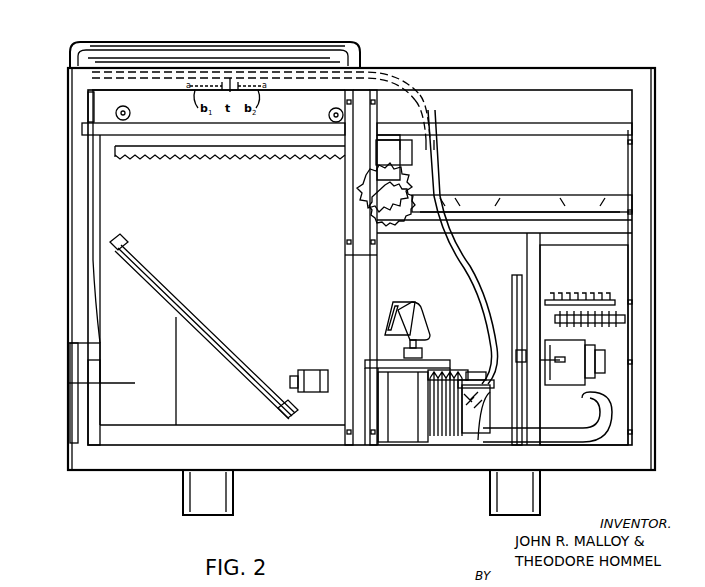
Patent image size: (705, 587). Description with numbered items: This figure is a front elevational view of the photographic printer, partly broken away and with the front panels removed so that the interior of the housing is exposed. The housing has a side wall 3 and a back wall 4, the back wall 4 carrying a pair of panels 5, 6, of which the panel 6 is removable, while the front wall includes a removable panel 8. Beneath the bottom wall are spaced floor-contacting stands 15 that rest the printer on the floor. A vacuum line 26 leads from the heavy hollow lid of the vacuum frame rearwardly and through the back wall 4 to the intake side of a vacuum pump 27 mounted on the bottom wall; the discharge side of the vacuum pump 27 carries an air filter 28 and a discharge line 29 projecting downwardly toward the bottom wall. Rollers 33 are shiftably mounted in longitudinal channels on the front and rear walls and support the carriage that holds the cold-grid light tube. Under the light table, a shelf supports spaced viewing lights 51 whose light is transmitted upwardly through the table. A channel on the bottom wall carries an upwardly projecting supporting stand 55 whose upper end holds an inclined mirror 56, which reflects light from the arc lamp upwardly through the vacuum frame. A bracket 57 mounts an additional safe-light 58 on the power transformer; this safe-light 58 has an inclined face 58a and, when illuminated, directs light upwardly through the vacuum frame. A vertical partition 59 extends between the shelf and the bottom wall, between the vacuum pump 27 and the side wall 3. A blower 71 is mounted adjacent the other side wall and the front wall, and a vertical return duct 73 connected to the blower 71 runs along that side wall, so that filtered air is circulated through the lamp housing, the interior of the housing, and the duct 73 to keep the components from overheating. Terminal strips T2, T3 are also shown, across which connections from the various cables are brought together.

The panel 5 is at (125, 185).
The panel 6 is at (602, 172).
The removable panel 8 is at (96, 5).
The back wall 4 is at (27, 55).
The side wall 3 is at (100, 256).
The floor-contacting stand 15 is at (183, 499).
The vacuum line 26 is at (440, 176).
The vacuum pump 27 is at (405, 428).
The air filter 28 is at (455, 420).
The discharge line 29 is at (478, 440).
The roller 33 is at (130, 110).
The viewing light 51 is at (515, 195).
The supporting stand 55 is at (176, 333).
The inclined mirror 56 is at (160, 283).
The bracket 57 is at (412, 358).
The safe-light 58 is at (425, 315).
The inclined face 58a is at (392, 310).
The vertical partition 59 is at (527, 250).
The blower 71 is at (113, 392).
The vertical return duct 73 is at (92, 221).
The terminal strip T2 is at (574, 292).
The terminal strip T3 is at (605, 325).